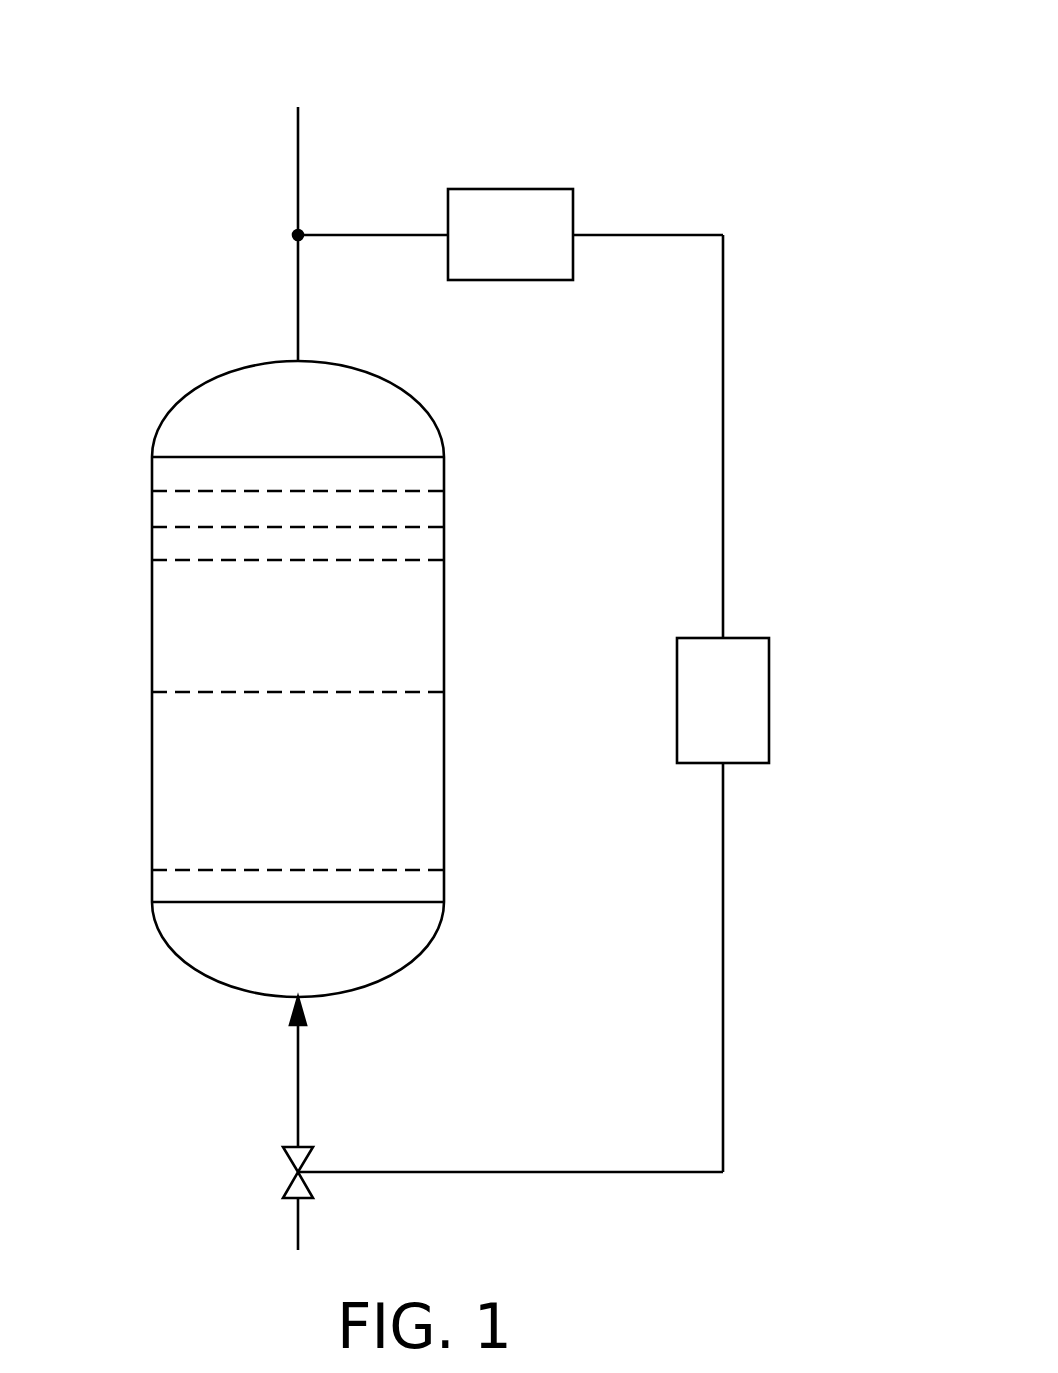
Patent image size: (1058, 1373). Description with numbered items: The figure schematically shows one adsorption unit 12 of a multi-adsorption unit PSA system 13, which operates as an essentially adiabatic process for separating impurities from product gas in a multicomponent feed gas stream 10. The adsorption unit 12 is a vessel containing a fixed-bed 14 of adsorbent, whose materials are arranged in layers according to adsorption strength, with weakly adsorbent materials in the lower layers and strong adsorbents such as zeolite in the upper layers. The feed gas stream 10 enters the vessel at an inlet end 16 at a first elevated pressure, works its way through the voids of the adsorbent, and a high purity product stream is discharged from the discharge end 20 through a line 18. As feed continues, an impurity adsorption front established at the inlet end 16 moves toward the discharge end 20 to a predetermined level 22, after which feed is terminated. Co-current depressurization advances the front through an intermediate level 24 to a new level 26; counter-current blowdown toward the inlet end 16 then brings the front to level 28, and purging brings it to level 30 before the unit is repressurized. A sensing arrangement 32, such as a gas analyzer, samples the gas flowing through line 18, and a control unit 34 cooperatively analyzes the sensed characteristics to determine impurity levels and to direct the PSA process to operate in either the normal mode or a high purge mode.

The feed gas stream 10 is at (298, 1072).
The adsorption unit 12 is at (152, 744).
The PSA system 13 is at (822, 46).
The fixed-bed 14 is at (316, 645).
The inlet end 16 is at (364, 987).
The line 18 is at (300, 300).
The discharge end 20 is at (406, 388).
The predetermined level 22 is at (436, 560).
The level 24 is at (163, 527).
The new level 26 is at (436, 491).
The level 28 is at (388, 691).
The level 30 is at (388, 869).
The sensing arrangement 32 is at (532, 254).
The control unit 34 is at (745, 717).